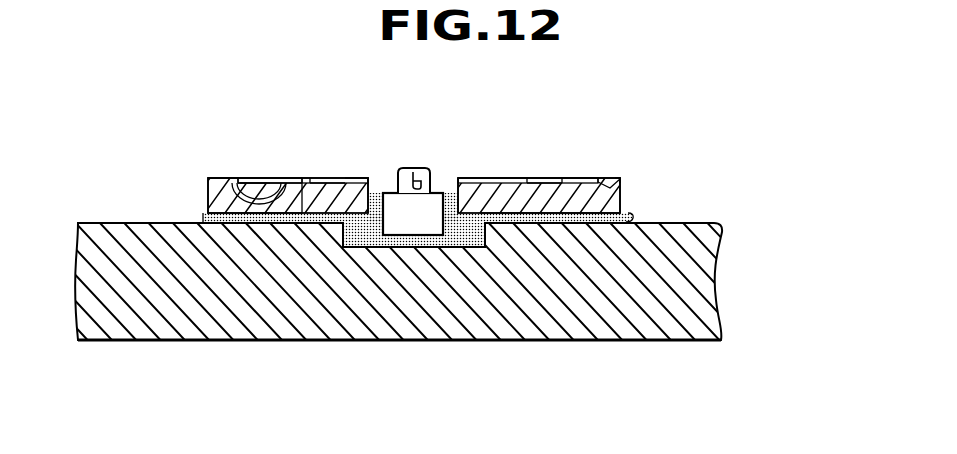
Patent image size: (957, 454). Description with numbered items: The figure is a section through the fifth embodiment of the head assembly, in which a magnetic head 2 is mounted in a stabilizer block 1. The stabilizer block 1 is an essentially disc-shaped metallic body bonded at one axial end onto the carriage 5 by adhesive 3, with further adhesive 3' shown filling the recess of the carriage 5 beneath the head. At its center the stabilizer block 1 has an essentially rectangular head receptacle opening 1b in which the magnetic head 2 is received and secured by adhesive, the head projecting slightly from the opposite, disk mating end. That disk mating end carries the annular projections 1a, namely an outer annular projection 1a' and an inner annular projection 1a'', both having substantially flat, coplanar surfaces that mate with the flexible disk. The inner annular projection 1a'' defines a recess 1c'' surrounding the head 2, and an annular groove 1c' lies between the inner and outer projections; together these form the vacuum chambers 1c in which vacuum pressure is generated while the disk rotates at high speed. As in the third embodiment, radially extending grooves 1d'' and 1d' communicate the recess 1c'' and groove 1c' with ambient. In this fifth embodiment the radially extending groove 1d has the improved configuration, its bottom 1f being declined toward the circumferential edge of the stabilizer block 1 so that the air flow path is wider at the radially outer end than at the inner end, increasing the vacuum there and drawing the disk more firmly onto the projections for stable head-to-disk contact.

The stabilizer block 1 is at (287, 211).
The first portion of package body 1a is at (251, 135).
The outer annular projection 1a' is at (202, 142).
The inner annular projection 1a'' is at (254, 142).
The head receptacle opening 1b is at (376, 179).
The second portion of package body 1c is at (272, 131).
The annular groove 1c' is at (267, 142).
The recess 1c'' is at (324, 142).
The radially extending groove 1d is at (552, 138).
The radially extending groove 1d' is at (617, 147).
The radially extending groove 1d'' is at (559, 145).
The bottom of radially extending groove 1f is at (622, 182).
The magnetic head 2 is at (405, 170).
The adhesive 3 is at (472, 212).
The adhesive filling in recess 3' is at (418, 290).
The carriage 5 is at (690, 262).